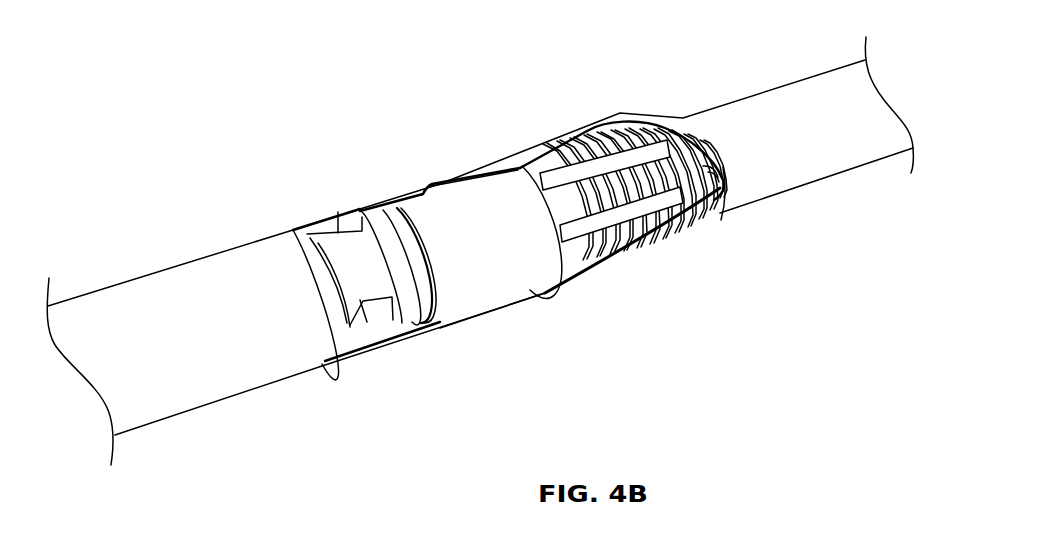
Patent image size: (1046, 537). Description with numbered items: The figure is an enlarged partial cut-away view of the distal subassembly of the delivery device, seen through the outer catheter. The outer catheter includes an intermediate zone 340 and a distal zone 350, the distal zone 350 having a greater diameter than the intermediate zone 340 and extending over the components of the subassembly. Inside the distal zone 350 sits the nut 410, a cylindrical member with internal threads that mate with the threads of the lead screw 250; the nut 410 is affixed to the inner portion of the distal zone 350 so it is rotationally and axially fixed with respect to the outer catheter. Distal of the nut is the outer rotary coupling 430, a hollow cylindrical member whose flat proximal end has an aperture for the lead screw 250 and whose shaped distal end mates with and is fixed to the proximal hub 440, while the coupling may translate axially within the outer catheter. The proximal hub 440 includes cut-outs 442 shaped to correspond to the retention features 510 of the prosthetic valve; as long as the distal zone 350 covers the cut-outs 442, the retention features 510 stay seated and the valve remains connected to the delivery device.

The lead screw 250 is at (705, 175).
The intermediate zone 340 is at (773, 102).
The distal zone 350 is at (177, 281).
The nut 410 is at (638, 207).
The outer rotary coupling 430 is at (492, 283).
The proximal hub 440 is at (420, 258).
The cut-outs 442 is at (338, 227).
The retention features 510 is at (340, 213).